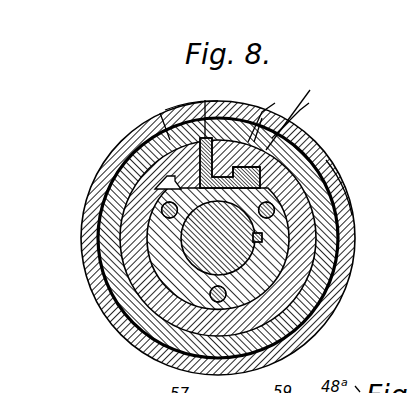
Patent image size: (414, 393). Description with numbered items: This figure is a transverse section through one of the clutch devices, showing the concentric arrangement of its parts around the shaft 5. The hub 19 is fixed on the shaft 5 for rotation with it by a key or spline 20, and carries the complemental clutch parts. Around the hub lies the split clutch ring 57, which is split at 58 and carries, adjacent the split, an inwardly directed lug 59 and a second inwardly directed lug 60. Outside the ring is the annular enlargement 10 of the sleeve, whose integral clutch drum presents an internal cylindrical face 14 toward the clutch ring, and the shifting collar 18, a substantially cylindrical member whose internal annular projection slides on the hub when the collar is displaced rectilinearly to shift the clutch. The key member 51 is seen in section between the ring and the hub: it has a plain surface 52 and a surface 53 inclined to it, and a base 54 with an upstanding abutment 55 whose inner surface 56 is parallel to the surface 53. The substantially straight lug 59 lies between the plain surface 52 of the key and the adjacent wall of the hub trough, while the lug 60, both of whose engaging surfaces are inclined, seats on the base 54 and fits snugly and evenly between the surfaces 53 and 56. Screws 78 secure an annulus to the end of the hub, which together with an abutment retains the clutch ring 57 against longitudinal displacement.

The shaft 5 is at (262, 238).
The annular enlargement 10 is at (86, 246).
The internal cylindrical face 14 is at (125, 203).
The shifting collar 18 is at (346, 192).
The hub 19 is at (328, 159).
The key or spline 20 is at (313, 222).
The key member 51 is at (201, 140).
The plain surface 52 is at (165, 110).
The inclined surface 53 is at (133, 162).
The base 54 is at (300, 117).
The upstanding abutment 55 is at (297, 114).
The inner surface 56 is at (271, 118).
The clutch ring 57 is at (312, 273).
The split 58 is at (205, 100).
The inwardly directed lug 59 is at (153, 135).
The inwardly directed lug 60 is at (246, 167).
The screws 78 is at (183, 371).